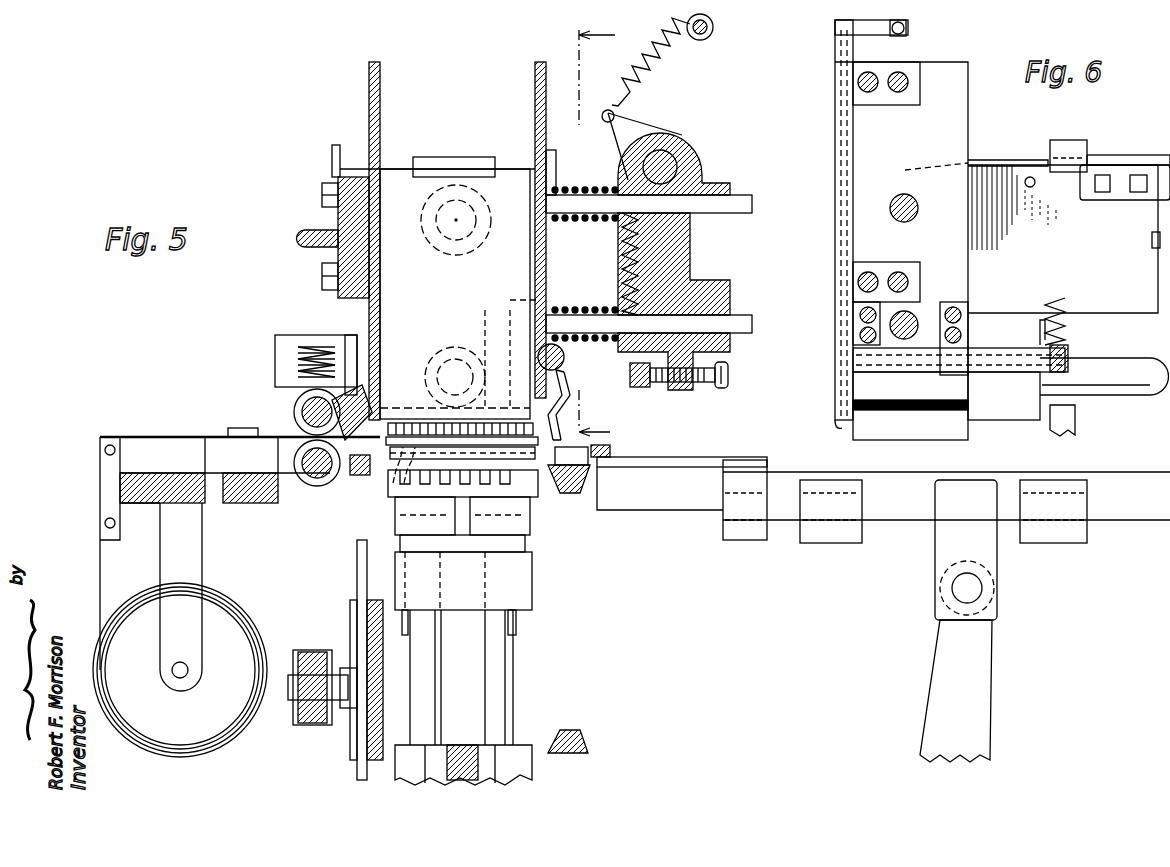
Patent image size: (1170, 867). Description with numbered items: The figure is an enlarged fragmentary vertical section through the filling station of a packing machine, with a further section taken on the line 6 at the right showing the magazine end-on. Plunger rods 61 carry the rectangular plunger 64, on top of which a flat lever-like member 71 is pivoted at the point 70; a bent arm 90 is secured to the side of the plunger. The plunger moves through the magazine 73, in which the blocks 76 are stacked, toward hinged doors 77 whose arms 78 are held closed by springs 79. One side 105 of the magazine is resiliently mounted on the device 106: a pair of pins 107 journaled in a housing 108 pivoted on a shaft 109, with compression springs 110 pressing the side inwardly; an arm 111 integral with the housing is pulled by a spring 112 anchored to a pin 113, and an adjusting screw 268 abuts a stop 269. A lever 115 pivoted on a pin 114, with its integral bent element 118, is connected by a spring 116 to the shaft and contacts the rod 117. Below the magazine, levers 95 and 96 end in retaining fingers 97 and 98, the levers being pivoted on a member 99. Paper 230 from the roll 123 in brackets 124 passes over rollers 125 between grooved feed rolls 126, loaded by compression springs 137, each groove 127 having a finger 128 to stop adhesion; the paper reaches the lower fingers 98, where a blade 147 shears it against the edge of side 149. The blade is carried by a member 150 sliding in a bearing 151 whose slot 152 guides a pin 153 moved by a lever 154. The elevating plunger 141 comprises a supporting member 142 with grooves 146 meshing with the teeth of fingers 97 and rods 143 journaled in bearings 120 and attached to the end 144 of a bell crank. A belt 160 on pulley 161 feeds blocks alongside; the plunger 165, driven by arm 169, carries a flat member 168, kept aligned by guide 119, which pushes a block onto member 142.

In FIG. 5, the section line 6 is at (601, 224).
In FIG. 5, the plunger rods 61 is at (438, 240).
In FIG. 5, the plunger 64 is at (475, 190).
In FIG. 6, the pivot point 70 is at (1028, 177).
In FIG. 5, the flat lever-like member 71 is at (437, 157).
In FIG. 6, the flat lever-like member 71 is at (1130, 160).
In FIG. 5, the magazine 73 is at (386, 168).
In FIG. 5, the blocks 76 is at (585, 488).
In FIG. 6, the hinged doors 77 is at (835, 375).
In FIG. 6, the arms 78 is at (870, 26).
In FIG. 6, the spring 79 is at (906, 28).
In FIG. 5, the bent arm 90 is at (335, 146).
In FIG. 6, the bent arm 90 is at (1068, 145).
In FIG. 5, the levers 95 is at (515, 630).
In FIG. 5, the levers 96 is at (408, 622).
In FIG. 5, the retaining fingers 97 is at (444, 423).
In FIG. 5, the retaining fingers 98 is at (520, 500).
In FIG. 5, the member / bearings 99 is at (845, 545).
In FIG. 5, the side of the magazine 105 is at (535, 262).
In FIG. 6, the side of the magazine 105 is at (950, 127).
In FIG. 5, the resilient mounting device 106 is at (714, 145).
In FIG. 5, the pins 107 is at (752, 204).
In FIG. 6, the pins 107 is at (890, 208).
In FIG. 5, the housing 108 is at (705, 243).
In FIG. 5, the shaft 109 is at (670, 160).
In FIG. 5, the compression spring 110 is at (600, 225).
In FIG. 5, the arm 111 is at (650, 125).
In FIG. 5, the spring 112 is at (690, 60).
In FIG. 5, the pin 113 is at (713, 30).
In FIG. 5, the pin 114 is at (570, 400).
In FIG. 6, the pin 114 is at (1000, 355).
In FIG. 5, the lever 115 is at (540, 312).
In FIG. 6, the lever 115 is at (1070, 352).
In FIG. 5, the spring 116 is at (622, 255).
In FIG. 6, the spring 116 is at (1068, 300).
In FIG. 5, the rod 117 is at (490, 360).
In FIG. 6, the rod 117 is at (1075, 430).
In FIG. 5, the bent element 118 is at (560, 413).
In FIG. 6, the bent element 118 is at (925, 430).
In FIG. 5, the guide 119 is at (612, 450).
In FIG. 5, the bearings 120 is at (532, 605).
In FIG. 5, the roll of paper 123 is at (230, 600).
In FIG. 5, the brackets 124 is at (195, 540).
In FIG. 5, the rollers 125 is at (100, 450).
In FIG. 5, the grooved feed rolls 126 is at (294, 405).
In FIG. 5, the groove 127 is at (300, 420).
In FIG. 5, the finger 128 is at (372, 390).
In FIG. 5, the compression springs 137 is at (298, 355).
In FIG. 5, the elevating plunger 141 is at (556, 568).
In FIG. 5, the supporting member 142 is at (520, 535).
In FIG. 5, the rods 143 is at (505, 705).
In FIG. 5, the end of bell crank lever 144 is at (532, 765).
In FIG. 5, the grooves 146 is at (395, 487).
In FIG. 5, the blade 147 is at (390, 512).
In FIG. 5, the side of the magazine 149 is at (385, 420).
In FIG. 5, the member 150 is at (357, 578).
In FIG. 5, the bearing 151 is at (370, 740).
In FIG. 5, the slot 152 is at (358, 665).
In FIG. 5, the pin 153 is at (348, 680).
In FIG. 5, the lever 154 is at (298, 720).
In FIG. 5, the belt 160 is at (585, 735).
In FIG. 6, the pulley 161 is at (1152, 240).
In FIG. 5, the plunger 165 is at (762, 545).
In FIG. 5, the flat member 168 is at (695, 470).
In FIG. 5, the arm 169 is at (980, 667).
In FIG. 5, the paper 230 is at (195, 437).
In FIG. 5, the adjusting screw 268 is at (728, 380).
In FIG. 5, the stop 269 is at (648, 390).